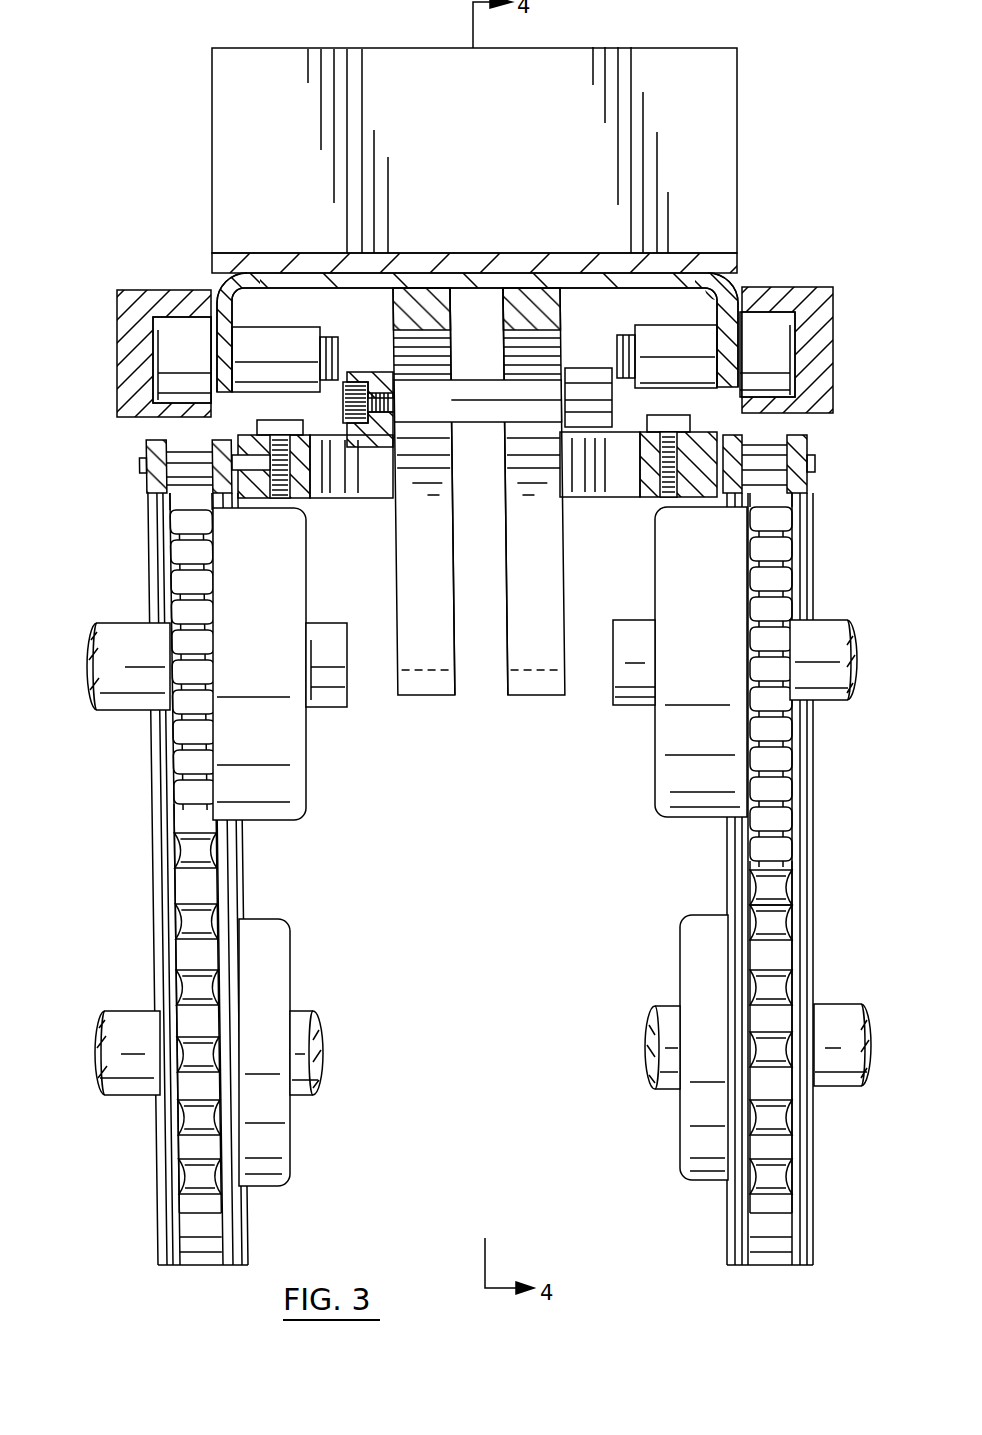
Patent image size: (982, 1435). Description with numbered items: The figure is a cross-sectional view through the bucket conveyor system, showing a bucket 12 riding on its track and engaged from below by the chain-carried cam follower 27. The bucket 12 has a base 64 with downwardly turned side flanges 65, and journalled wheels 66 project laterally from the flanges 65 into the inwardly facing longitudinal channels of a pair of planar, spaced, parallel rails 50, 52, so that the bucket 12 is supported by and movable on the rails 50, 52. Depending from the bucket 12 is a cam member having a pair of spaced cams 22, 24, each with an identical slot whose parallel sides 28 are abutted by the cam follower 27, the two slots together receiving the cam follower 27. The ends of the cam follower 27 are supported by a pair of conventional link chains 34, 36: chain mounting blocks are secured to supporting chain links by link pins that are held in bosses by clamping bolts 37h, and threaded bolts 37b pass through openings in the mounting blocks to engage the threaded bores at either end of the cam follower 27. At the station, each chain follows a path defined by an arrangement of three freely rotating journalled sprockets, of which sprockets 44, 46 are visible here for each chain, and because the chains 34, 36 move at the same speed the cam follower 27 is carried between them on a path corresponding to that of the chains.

The bucket 12 is at (737, 173).
The cam 22 is at (443, 697).
The cam 24 is at (516, 698).
The cam follower 27 is at (547, 377).
The side of slot 28 is at (520, 565).
The link chain 34 is at (165, 558).
The link chain 36 is at (768, 548).
The clamping bolt 37h is at (280, 420).
The threaded bolt 37b is at (357, 497).
The sprocket 44 is at (290, 780).
The sprocket 46 is at (282, 1145).
The rail 50 is at (117, 332).
The rail 52 is at (833, 315).
The base 64 is at (250, 284).
The side flange 65 is at (737, 294).
The wheel 66 is at (160, 355).